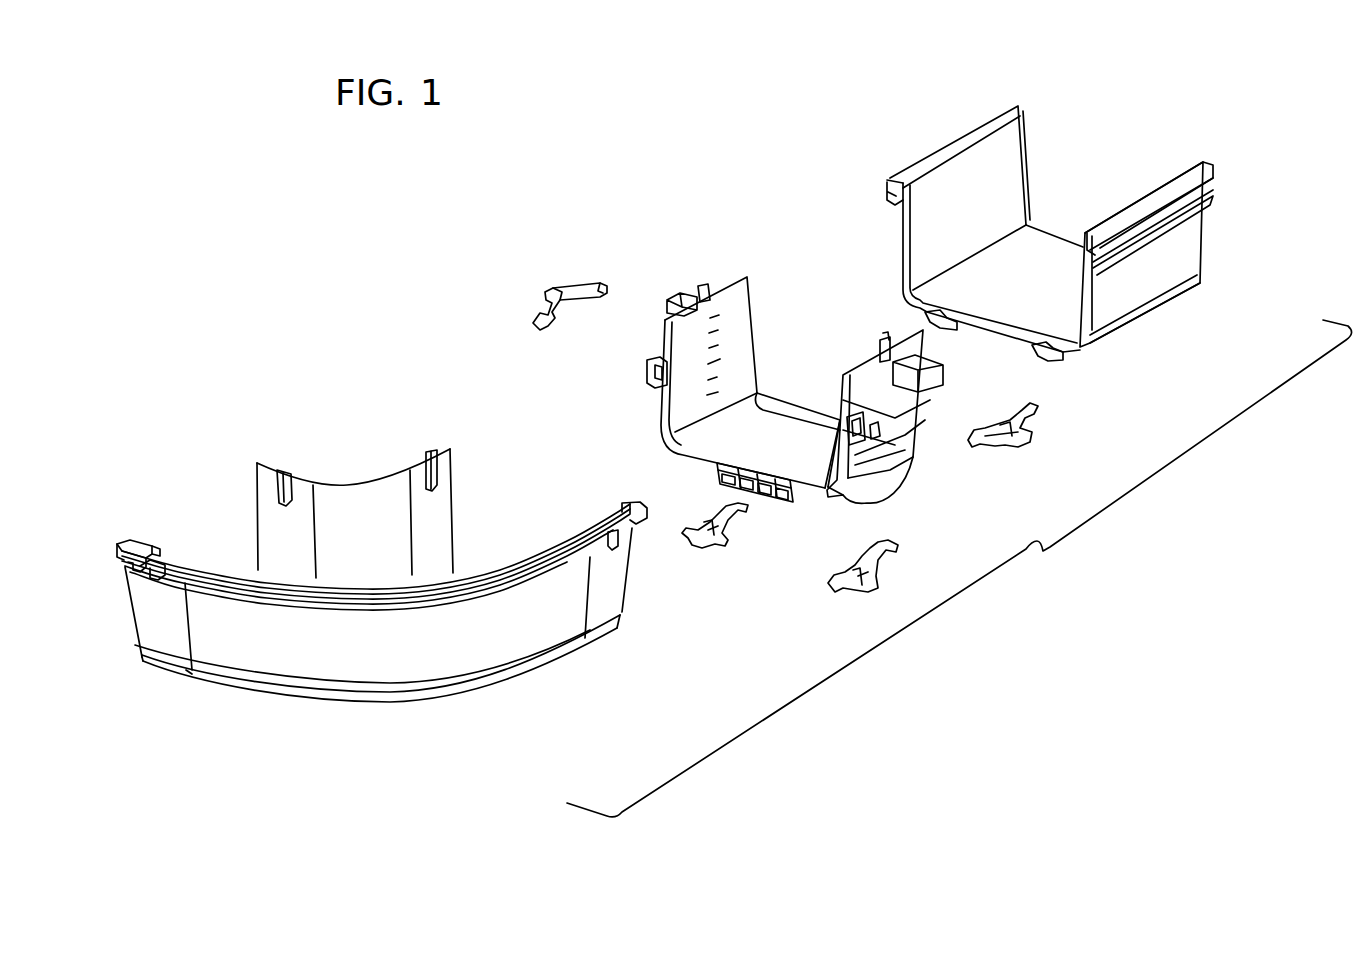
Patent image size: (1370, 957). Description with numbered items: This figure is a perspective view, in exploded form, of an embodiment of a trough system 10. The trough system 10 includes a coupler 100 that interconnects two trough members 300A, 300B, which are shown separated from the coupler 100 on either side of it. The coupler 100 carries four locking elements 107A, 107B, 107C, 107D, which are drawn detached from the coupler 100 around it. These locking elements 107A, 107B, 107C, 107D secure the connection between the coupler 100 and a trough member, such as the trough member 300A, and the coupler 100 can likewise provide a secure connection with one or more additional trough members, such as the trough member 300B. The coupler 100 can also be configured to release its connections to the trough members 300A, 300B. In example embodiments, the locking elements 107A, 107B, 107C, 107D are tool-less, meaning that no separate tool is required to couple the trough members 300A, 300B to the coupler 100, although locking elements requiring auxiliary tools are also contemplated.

The trough system 10 is at (959, 568).
The coupler 100 is at (691, 247).
The trough member 300A is at (1123, 141).
The trough member 300B is at (349, 428).
The locking element 107A is at (1036, 430).
The locking element 107B is at (878, 580).
The locking element 107C is at (705, 547).
The locking element 107D is at (553, 286).